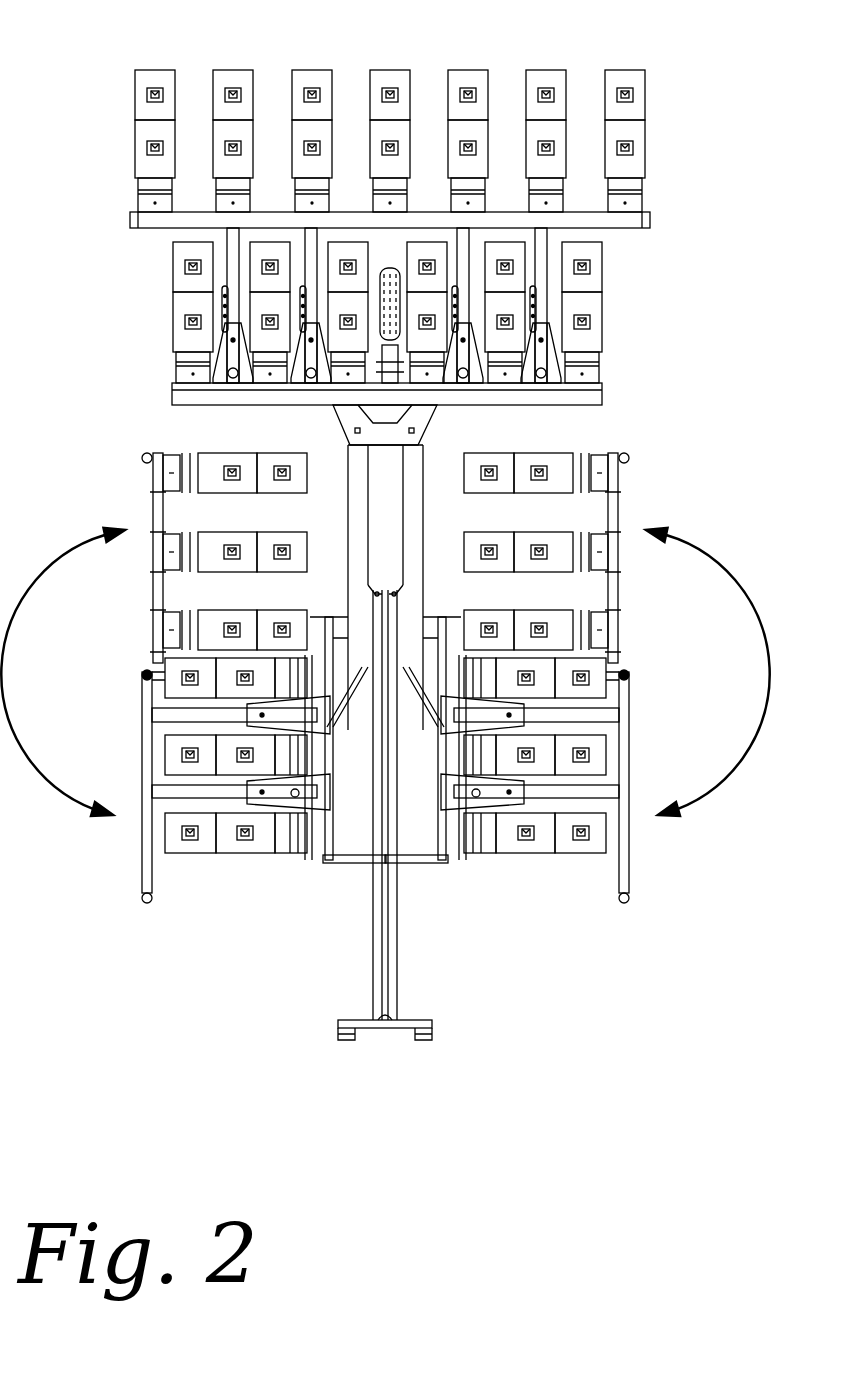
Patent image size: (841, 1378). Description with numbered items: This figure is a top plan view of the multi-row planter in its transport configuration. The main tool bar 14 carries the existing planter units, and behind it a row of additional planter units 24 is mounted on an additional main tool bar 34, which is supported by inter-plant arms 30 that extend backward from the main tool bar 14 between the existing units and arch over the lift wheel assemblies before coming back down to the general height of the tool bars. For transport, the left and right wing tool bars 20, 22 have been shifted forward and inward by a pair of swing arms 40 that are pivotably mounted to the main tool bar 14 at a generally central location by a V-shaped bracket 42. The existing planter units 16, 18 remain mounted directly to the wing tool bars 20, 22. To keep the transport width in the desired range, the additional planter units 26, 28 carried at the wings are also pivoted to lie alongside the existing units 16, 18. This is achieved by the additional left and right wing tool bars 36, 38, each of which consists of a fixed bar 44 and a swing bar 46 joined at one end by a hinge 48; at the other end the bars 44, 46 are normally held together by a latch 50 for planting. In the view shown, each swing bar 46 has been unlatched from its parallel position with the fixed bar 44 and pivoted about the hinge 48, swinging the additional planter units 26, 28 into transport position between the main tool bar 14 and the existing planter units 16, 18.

The main tool bar 14 is at (582, 400).
The existing planter units on left wing 16 is at (175, 850).
The existing planter units on right wing 18 is at (596, 850).
The left wing tool bar 20 is at (326, 870).
The right wing tool bar 22 is at (445, 870).
The additional planter units 24 is at (233, 78).
The additional planter units on left wing 26 is at (295, 618).
The additional planter units on right wing 28 is at (476, 618).
The inter-plant arms 30 is at (300, 240).
The additional main tool bar 34 is at (583, 212).
The additional left wing tool bar 36 is at (138, 826).
The additional right wing tool bar 38 is at (618, 826).
The swing arms 40 is at (358, 475).
The V-shaped bracket 42 is at (420, 420).
The fixed bar 44 is at (142, 890).
The swing bar 46 is at (153, 590).
The hinge 48 is at (142, 676).
The latch 50 is at (141, 458).